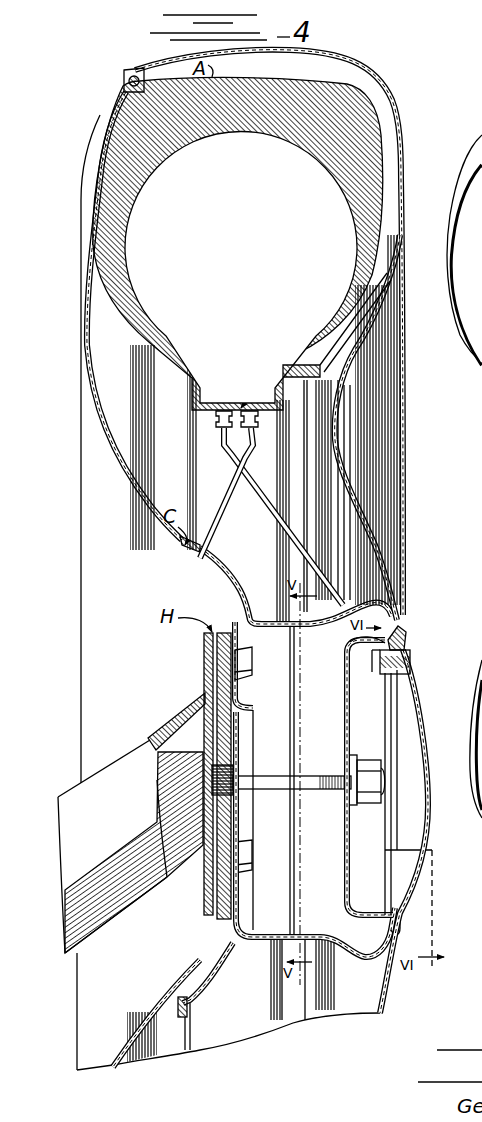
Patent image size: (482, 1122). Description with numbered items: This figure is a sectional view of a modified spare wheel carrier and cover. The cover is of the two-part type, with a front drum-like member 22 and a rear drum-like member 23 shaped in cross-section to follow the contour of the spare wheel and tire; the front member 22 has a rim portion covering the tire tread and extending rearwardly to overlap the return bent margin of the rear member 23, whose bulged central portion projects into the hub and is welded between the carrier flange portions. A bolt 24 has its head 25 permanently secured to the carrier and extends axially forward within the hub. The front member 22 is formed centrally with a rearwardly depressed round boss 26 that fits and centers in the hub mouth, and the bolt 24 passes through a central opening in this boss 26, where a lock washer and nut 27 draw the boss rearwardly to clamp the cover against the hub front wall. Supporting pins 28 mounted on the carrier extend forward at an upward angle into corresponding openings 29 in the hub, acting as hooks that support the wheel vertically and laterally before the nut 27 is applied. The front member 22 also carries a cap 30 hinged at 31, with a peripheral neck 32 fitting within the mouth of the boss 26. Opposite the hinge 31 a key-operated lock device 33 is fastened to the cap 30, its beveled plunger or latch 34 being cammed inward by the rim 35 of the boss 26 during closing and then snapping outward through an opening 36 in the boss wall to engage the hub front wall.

The front drum-like cover member 22 is at (397, 152).
The rear drum-like cover member 23 is at (88, 157).
The bolt 24 is at (305, 790).
The bolt head 25 is at (212, 790).
The rearwardly depressed boss 26 is at (345, 881).
The lock washer and nut 27 is at (361, 757).
The supporting pins 28 is at (245, 664).
The openings in the hub 29 is at (244, 690).
The cap 30 is at (429, 800).
The hinge 31 is at (399, 928).
The peripheral neck 32 is at (388, 900).
The lock device 33 is at (407, 663).
The plunger or latch 34 is at (384, 643).
The rim of the boss 35 is at (402, 643).
The opening in the boss wall 36 is at (378, 651).